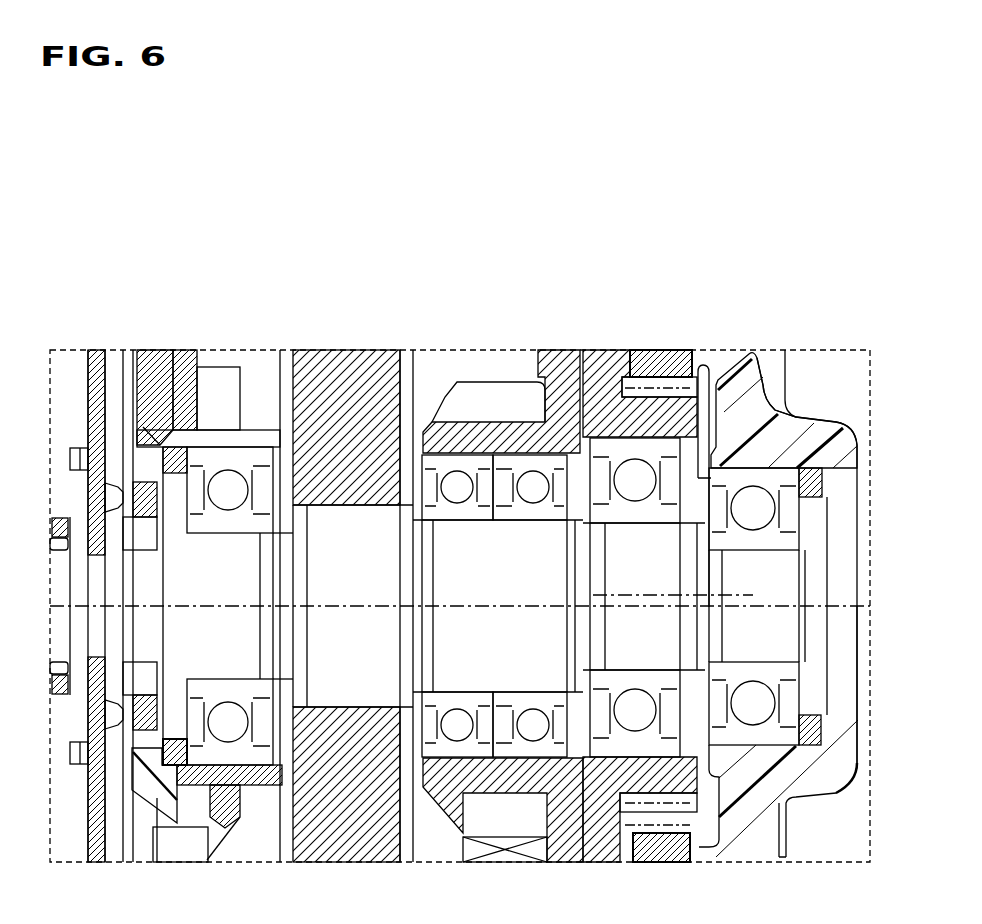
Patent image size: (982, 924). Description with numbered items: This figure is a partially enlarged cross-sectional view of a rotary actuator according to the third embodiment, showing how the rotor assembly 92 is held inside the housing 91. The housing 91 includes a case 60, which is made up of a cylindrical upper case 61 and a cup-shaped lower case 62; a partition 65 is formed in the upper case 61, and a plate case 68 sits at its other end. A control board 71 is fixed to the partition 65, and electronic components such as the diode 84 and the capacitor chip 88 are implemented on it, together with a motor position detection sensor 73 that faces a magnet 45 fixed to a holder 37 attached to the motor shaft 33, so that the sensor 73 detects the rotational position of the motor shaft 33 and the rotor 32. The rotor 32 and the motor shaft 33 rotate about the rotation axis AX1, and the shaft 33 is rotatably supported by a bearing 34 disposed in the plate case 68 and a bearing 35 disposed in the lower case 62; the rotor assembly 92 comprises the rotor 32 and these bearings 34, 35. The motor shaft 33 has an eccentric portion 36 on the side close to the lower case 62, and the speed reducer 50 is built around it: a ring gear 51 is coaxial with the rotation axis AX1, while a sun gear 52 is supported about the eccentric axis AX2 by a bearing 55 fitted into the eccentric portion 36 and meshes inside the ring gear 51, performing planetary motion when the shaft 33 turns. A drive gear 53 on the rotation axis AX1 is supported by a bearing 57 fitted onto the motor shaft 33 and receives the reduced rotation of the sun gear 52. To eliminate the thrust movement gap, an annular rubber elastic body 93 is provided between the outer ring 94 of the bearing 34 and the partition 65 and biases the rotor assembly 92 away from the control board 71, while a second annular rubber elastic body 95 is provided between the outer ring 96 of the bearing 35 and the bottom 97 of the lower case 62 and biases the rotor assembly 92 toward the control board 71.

The control board 71 is at (90, 390).
The magnet 45 is at (130, 477).
The capacitor chip 88 is at (78, 460).
The diode 84 is at (78, 755).
The motor position detection sensor 73 is at (115, 497).
The holder 37 is at (130, 543).
The housing 91 is at (160, 352).
The partition 65 is at (143, 427).
The plate case 68 is at (195, 395).
The bearing 34 is at (228, 490).
The motor shaft 33 is at (205, 630).
The rotor assembly 92 is at (344, 352).
The rotor 32 is at (348, 832).
The bearing 57 is at (458, 727).
The drive gear 53 is at (497, 408).
The speed reducer 50 is at (469, 372).
The sun gear 52 is at (600, 375).
The ring gear 51 is at (650, 363).
The bearing 55 is at (633, 705).
The lower case 62 is at (722, 390).
The case 60 is at (836, 416).
The eccentric portion 36 is at (650, 553).
The bearing 35 is at (758, 703).
The bottom 97 is at (840, 665).
The outer ring 96 is at (755, 735).
The elastic body 95 is at (808, 743).
The upper case 61 is at (147, 768).
The elastic body 93 is at (165, 752).
The outer ring 94 is at (217, 755).
The rotation axis AX1 is at (800, 606).
The eccentric axis AX2 is at (745, 595).